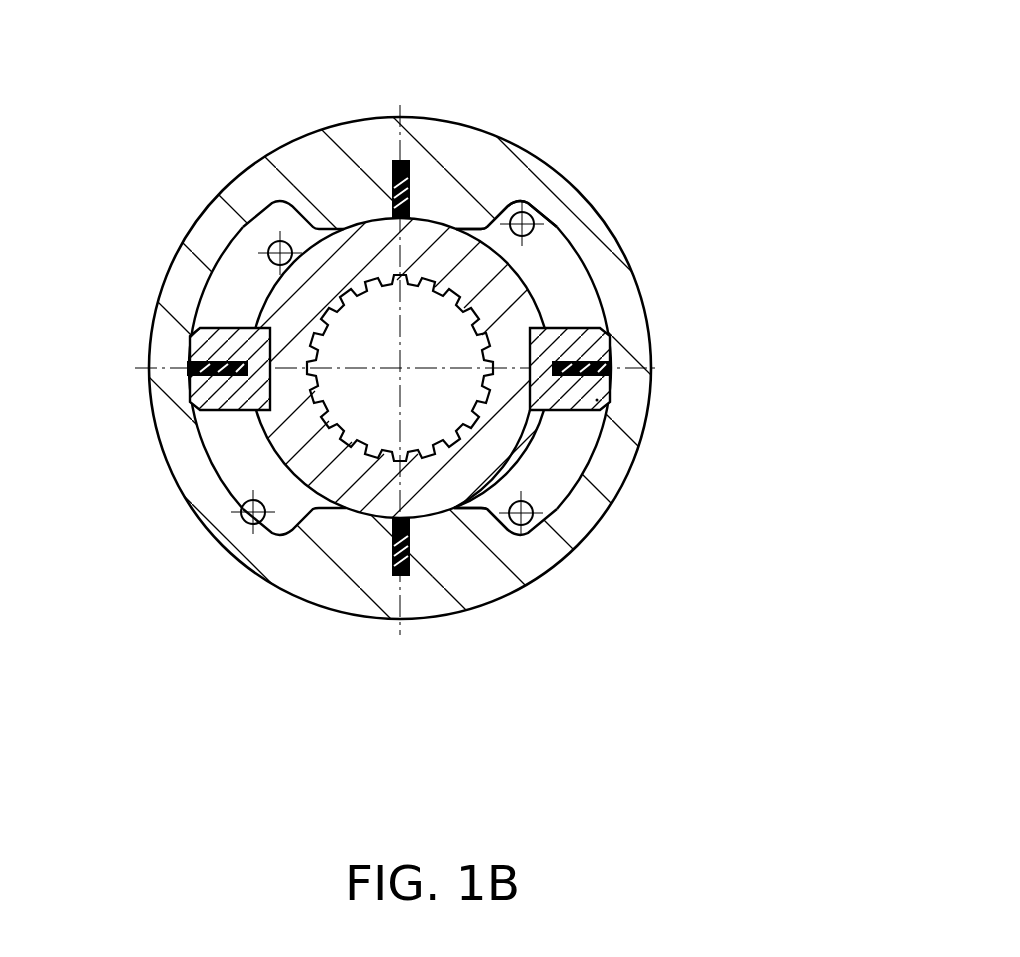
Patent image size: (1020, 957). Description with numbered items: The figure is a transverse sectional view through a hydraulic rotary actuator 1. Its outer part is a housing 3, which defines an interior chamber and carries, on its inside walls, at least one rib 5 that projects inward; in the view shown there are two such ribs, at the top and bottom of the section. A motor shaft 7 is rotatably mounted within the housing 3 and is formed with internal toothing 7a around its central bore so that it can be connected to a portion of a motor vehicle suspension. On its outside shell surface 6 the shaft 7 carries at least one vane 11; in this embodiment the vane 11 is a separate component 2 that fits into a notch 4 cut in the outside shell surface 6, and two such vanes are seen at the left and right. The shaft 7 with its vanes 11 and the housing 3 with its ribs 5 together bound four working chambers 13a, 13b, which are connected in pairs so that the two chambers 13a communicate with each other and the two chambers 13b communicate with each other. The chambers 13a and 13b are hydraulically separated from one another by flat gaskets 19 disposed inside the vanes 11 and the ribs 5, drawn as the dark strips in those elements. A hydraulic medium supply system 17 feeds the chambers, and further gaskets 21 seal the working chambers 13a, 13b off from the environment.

The hydraulic rotary actuator 1 is at (748, 505).
The separate component 2 is at (603, 341).
The housing 3 is at (590, 192).
The notch 4 is at (510, 393).
The rib 5 is at (505, 228).
The outside shell surface 6 is at (572, 478).
The motor shaft 7 is at (455, 250).
The internal toothing 7a is at (352, 278).
The vane 11 is at (598, 400).
The working chamber 13a is at (565, 302).
The working chamber 13b is at (232, 285).
The hydraulic medium supply system 17 is at (516, 530).
The flat gasket 19 is at (407, 156).
The gasket 21 is at (498, 532).